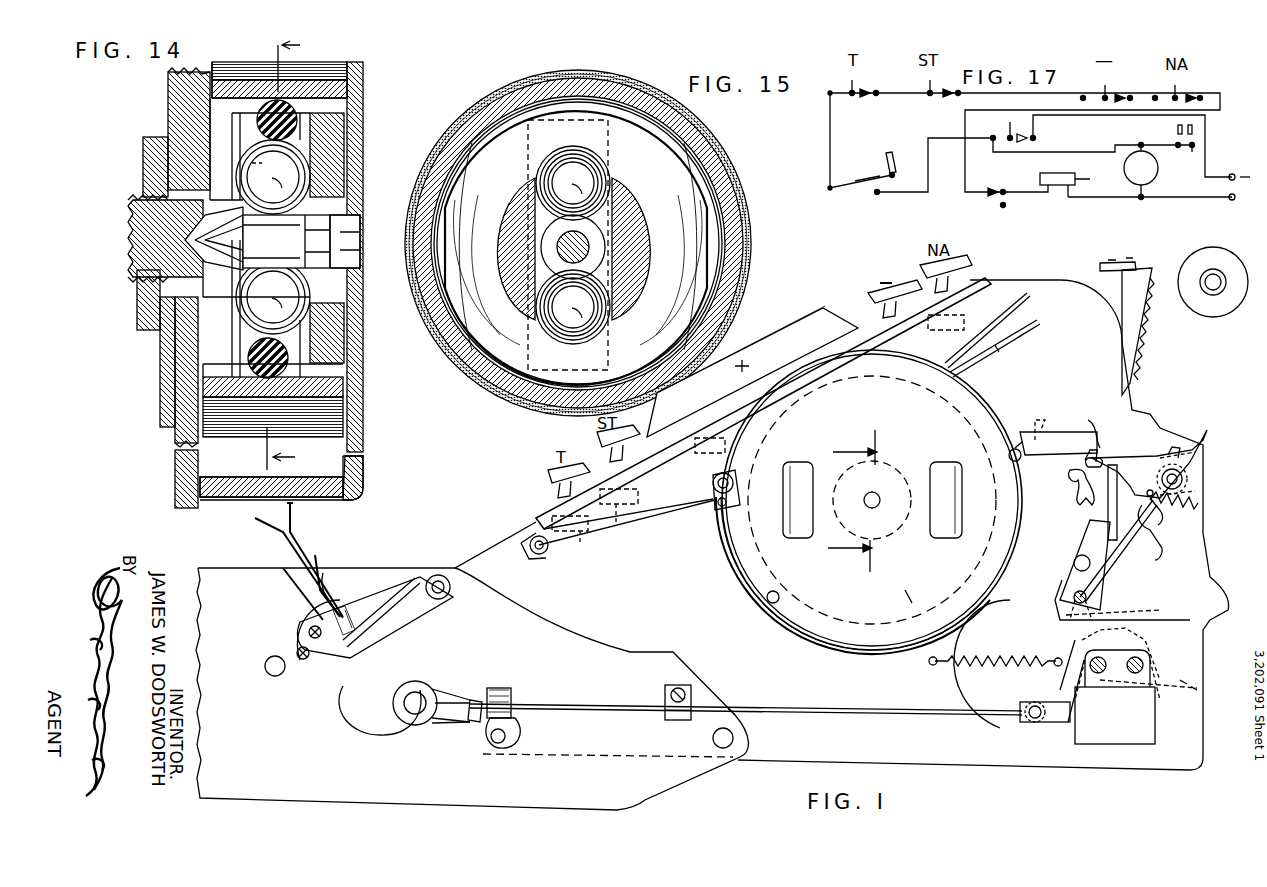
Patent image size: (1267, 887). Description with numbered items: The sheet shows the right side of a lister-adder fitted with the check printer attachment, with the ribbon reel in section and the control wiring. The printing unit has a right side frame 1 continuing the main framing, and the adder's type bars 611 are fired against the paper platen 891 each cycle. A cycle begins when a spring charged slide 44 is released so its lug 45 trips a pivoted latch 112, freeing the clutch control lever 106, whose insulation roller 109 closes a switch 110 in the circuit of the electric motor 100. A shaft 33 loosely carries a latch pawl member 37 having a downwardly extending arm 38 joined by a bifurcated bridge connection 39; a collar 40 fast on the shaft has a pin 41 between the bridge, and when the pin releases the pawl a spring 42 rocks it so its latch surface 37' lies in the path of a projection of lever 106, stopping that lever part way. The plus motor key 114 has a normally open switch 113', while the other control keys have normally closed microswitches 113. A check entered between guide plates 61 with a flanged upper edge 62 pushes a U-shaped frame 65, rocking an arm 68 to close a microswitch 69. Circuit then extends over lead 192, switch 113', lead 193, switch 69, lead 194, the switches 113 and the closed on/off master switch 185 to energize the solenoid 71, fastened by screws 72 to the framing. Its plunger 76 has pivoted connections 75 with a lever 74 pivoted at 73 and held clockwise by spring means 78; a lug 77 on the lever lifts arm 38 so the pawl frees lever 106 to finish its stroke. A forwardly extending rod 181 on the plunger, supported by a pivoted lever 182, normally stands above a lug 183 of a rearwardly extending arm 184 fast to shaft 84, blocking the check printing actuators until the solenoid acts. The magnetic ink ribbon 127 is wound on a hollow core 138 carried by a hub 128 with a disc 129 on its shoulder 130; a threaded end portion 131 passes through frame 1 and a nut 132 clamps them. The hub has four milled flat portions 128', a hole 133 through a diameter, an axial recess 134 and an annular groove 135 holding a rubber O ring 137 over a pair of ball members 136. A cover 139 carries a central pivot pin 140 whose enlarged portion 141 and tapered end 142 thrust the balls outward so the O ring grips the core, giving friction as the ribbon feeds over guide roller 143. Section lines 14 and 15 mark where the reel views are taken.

In FIG. 14, the right side frame 1 is at (170, 100).
In FIG. 1, the right side frame 1 is at (238, 575).
In FIG. 1, the section line 14— 14 is at (852, 501).
In FIG. 14, the section line 15— 15 is at (294, 253).
In FIG. 1, the shaft 33 is at (1178, 479).
In FIG. 1, the latch pawl member 37 is at (1149, 473).
In FIG. 1, the latch surface 37' is at (1110, 445).
In FIG. 1, the downwardly extending arm 38 is at (1146, 498).
In FIG. 1, the bifurcated bridge connection 39 is at (1196, 458).
In FIG. 1, the collar 40 is at (1196, 493).
In FIG. 1, the pin 41 is at (1192, 452).
In FIG. 1, the spring 42 is at (1198, 510).
In FIG. 1, the spring charged slide 44 is at (1040, 326).
In FIG. 1, the lug 45 is at (1028, 300).
In FIG. 1, the guide plates 61 is at (300, 552).
In FIG. 1, the flanged upper edge 62 is at (292, 515).
In FIG. 17, the U-shaped frame 65 is at (888, 156).
In FIG. 17, the upwardly extending arm 68 is at (893, 176).
In FIG. 17, the microswitch 69 is at (858, 178).
In FIG. 17, the electro solenoid 71 is at (1048, 172).
In FIG. 1, the electro solenoid 71 is at (1133, 746).
In FIG. 1, the screws 72 is at (1125, 670).
In FIG. 1, the pivot 73 is at (1088, 598).
In FIG. 1, the lever 74 is at (1136, 560).
In FIG. 1, the pivoted connections 75 is at (1034, 718).
In FIG. 1, the plunger 76 is at (1070, 725).
In FIG. 1, the lug 77 is at (1156, 528).
In FIG. 1, the spring means 78 is at (1015, 665).
In FIG. 1, the shaft 84 is at (404, 709).
In FIG. 17, the electric motor 100 is at (1125, 178).
In FIG. 1, the clutch control lever 106 is at (1096, 428).
In FIG. 1, the insulation roller 109 is at (1125, 612).
In FIG. 17, the switch 110 is at (1180, 142).
In FIG. 1, the switch 110 is at (1184, 698).
In FIG. 1, the pivoted latch 112 is at (1040, 437).
In FIG. 17, the microswitch 113 is at (1044, 100).
In FIG. 1, the microswitch 113 is at (762, 441).
In FIG. 17, the switch 113' is at (1000, 126).
In FIG. 1, the motor key 114 is at (802, 315).
In FIG. 14, the ribbon 127 is at (347, 72).
In FIG. 15, the ribbon 127 is at (716, 158).
In FIG. 1, the ribbon 127 is at (626, 522).
In FIG. 14, the hub 128 is at (359, 238).
In FIG. 15, the hub 128 is at (604, 243).
In FIG. 15, the flat portions 128' is at (660, 245).
In FIG. 14, the disc 129 is at (178, 438).
In FIG. 1, the disc 129 is at (728, 556).
In FIG. 14, the shoulder 130 is at (180, 349).
In FIG. 14, the threaded end portion 131 is at (140, 278).
In FIG. 14, the nut 132 is at (150, 173).
In FIG. 14, the hole 133 is at (362, 96).
In FIG. 15, the hole 133 is at (525, 90).
In FIG. 14, the recess 134 is at (165, 212).
In FIG. 14, the annular groove 135 is at (297, 128).
In FIG. 14, the ball members 136 is at (300, 180).
In FIG. 15, the ball members 136 is at (585, 165).
In FIG. 14, the rubber O ring 137 is at (345, 374).
In FIG. 15, the rubber O ring 137 is at (686, 232).
In FIG. 14, the hollow core 138 is at (245, 82).
In FIG. 15, the hollow core 138 is at (722, 246).
In FIG. 1, the hollow core 138 is at (820, 618).
In FIG. 14, the cover 139 is at (350, 490).
In FIG. 1, the cover 139 is at (765, 596).
In FIG. 14, the central pivot pin 140 is at (358, 238).
In FIG. 14, the enlarged diameter portion 141 is at (337, 258).
In FIG. 14, the enlarged tapered end portion 142 is at (196, 232).
In FIG. 1, the guide roller 143 is at (350, 580).
In FIG. 1, the forwardly extending rod 181 is at (898, 722).
In FIG. 1, the pivoted lever 182 is at (515, 730).
In FIG. 1, the lug 183 is at (478, 732).
In FIG. 1, the rearwardly extending arm 184 is at (448, 715).
In FIG. 17, the on/off master switch 185 is at (980, 194).
In FIG. 17, the lead 192 is at (1048, 116).
In FIG. 17, the lead 193 is at (922, 158).
In FIG. 17, the lead 194 is at (828, 125).
In FIG. 1, the type bars 611 is at (1140, 320).
In FIG. 1, the paper platen 891 is at (1220, 258).